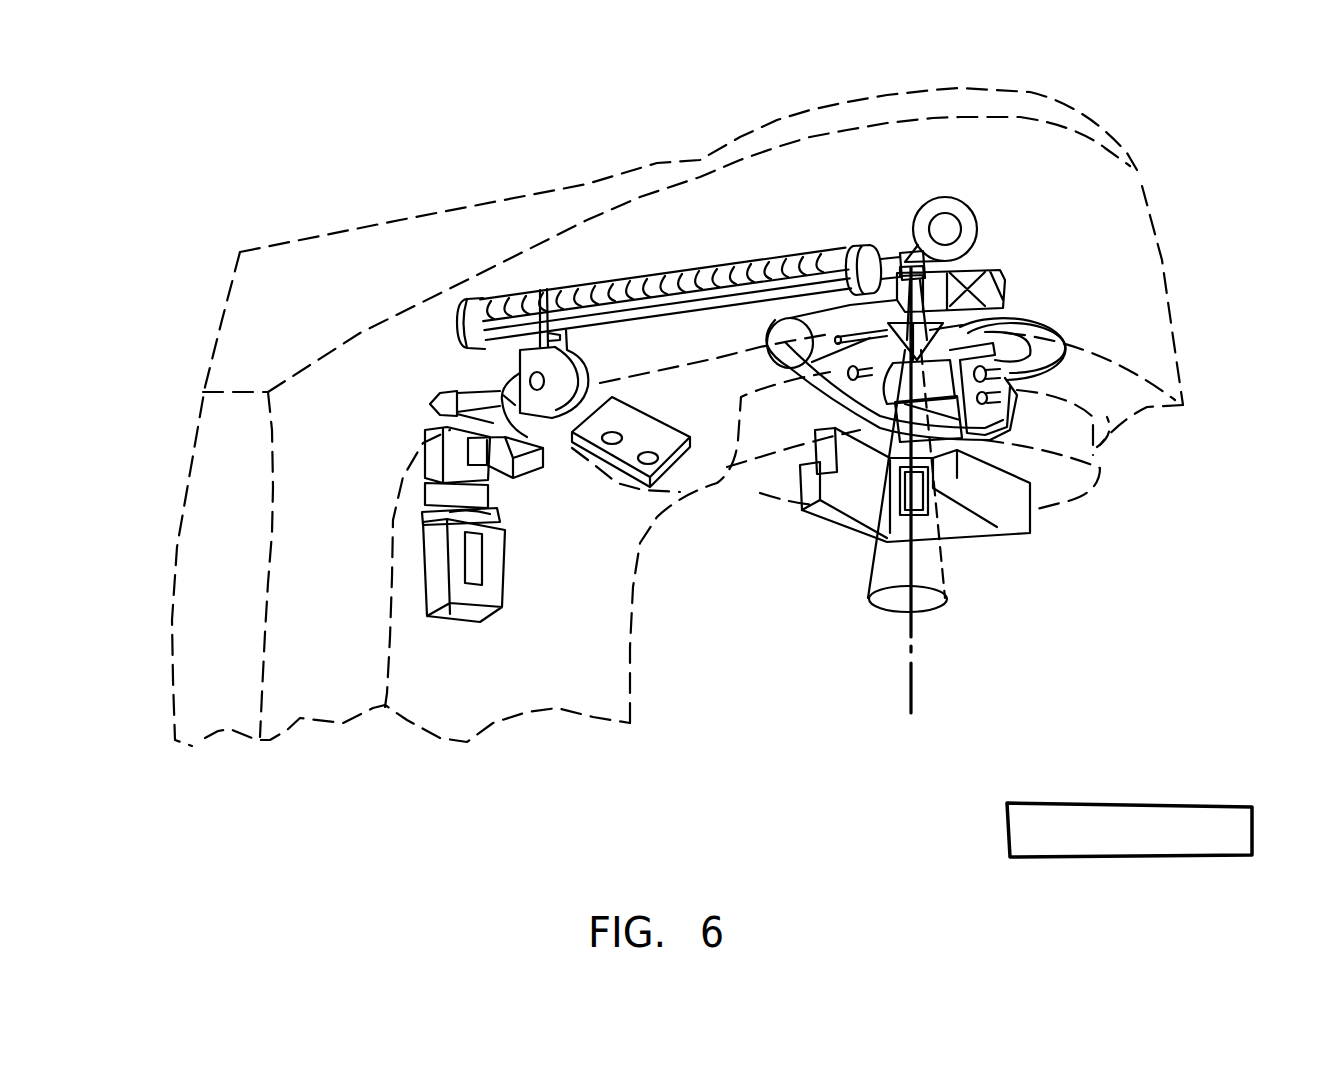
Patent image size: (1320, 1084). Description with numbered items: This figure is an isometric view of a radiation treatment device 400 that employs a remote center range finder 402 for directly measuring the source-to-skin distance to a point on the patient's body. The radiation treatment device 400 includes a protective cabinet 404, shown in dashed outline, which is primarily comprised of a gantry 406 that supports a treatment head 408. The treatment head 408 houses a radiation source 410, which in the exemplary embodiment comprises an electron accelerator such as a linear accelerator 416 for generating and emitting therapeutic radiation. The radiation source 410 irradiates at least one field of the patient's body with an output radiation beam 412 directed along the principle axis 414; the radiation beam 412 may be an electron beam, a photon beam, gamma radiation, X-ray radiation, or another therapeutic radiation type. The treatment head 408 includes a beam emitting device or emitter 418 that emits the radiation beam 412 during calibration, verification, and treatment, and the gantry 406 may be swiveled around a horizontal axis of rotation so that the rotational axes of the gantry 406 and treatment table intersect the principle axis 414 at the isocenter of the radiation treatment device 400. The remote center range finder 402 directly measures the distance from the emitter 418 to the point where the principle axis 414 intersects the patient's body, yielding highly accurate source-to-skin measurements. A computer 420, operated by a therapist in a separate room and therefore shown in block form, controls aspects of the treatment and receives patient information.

The radiation treatment device 400 is at (452, 136).
The remote center range finder 402 is at (653, 430).
The protective cabinet 404 is at (800, 112).
The gantry 406 is at (290, 298).
The treatment head 408 is at (978, 452).
The radiation source 410 is at (982, 224).
The output radiation beam 412 is at (880, 602).
The principle axis 414 is at (918, 692).
The linear accelerator (LINAC) 416 is at (720, 266).
The emitter 418 is at (952, 290).
The computer 420 is at (1138, 805).